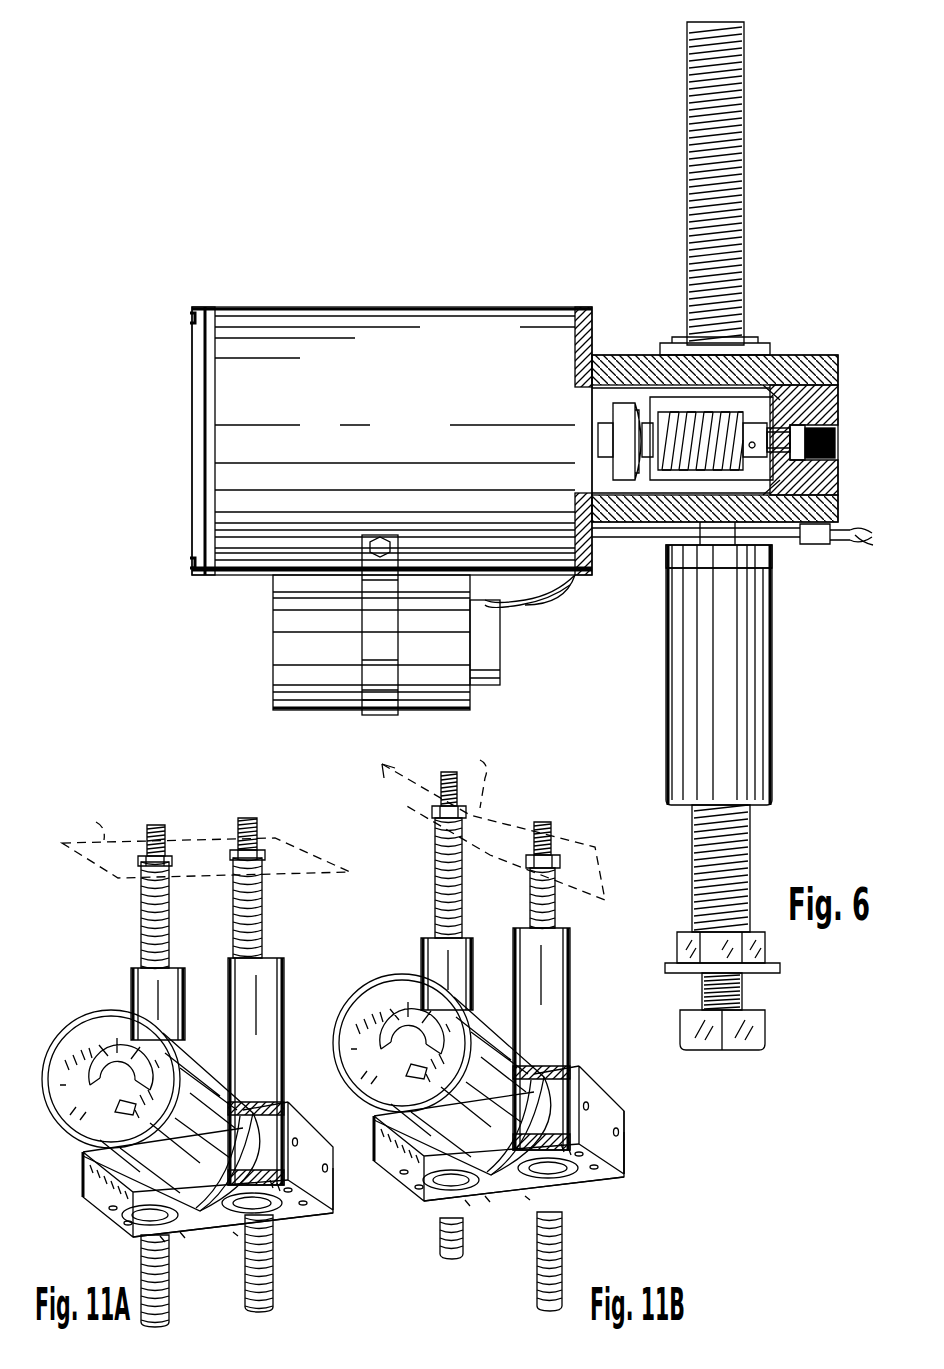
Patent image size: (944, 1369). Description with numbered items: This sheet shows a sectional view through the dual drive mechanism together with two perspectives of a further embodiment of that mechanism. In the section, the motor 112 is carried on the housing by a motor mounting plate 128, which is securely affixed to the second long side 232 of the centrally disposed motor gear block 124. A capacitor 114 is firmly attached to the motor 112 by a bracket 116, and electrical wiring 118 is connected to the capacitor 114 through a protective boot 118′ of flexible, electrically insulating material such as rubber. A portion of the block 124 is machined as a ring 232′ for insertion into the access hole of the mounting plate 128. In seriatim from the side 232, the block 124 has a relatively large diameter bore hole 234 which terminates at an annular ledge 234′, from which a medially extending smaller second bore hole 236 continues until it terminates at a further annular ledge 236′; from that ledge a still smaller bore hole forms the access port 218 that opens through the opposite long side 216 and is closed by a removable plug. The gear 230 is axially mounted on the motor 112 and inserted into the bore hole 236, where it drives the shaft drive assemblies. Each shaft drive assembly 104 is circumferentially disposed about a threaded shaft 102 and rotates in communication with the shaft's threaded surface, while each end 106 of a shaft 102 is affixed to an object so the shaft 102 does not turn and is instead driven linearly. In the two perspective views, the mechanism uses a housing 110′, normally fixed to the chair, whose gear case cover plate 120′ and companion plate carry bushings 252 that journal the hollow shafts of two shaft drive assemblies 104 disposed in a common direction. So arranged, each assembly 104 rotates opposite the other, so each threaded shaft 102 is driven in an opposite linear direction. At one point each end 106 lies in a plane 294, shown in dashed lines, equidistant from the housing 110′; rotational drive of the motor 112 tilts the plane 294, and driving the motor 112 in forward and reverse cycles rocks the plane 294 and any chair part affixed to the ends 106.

In FIG. 6, the threaded shaft 102 is at (758, 855).
In FIG. 11A, the threaded shaft 102 is at (233, 915).
In FIG. 11B, the threaded shaft 102 is at (524, 891).
In FIG. 6, the shaft drive assembly 104 is at (683, 703).
In FIG. 11A, the shaft drive assembly 104 is at (226, 985).
In FIG. 11B, the shaft drive assembly 104 is at (516, 955).
In FIG. 6, the end 106 is at (757, 1035).
In FIG. 11A, the end 106 is at (232, 858).
In FIG. 11B, the end 106 is at (528, 855).
In FIG. 11A, the housing 110′ is at (95, 1175).
In FIG. 11B, the housing 110′ is at (618, 1150).
In FIG. 6, the motor 112 is at (530, 565).
In FIG. 11A, the motor 112 is at (68, 1036).
In FIG. 11B, the motor 112 is at (380, 1002).
In FIG. 6, the capacitor 114 is at (330, 712).
In FIG. 6, the bracket 116 is at (378, 715).
In FIG. 6, the electrical wiring 118 is at (525, 595).
In FIG. 6, the protective boot 118′ is at (502, 650).
In FIG. 11A, the first gear case cover plate 120′ is at (305, 1120).
In FIG. 11B, the first gear case cover plate 120′ is at (605, 1090).
In FIG. 11B, the motor gear block 124 is at (615, 1122).
In FIG. 6, the motor mounting plate 128 is at (596, 583).
In FIG. 6, the long side 216 is at (840, 445).
In FIG. 6, the access port 218 is at (845, 385).
In FIG. 6, the gear 230 is at (775, 575).
In FIG. 6, the second long side 232 is at (592, 490).
In FIG. 6, the ring portion 232′ is at (598, 440).
In FIG. 6, the large diameter bore hole 234 is at (660, 345).
In FIG. 6, the annular ledge 234′ is at (700, 345).
In FIG. 6, the second bore hole 236 is at (760, 345).
In FIG. 6, the annular ledge 236′ is at (775, 345).
In FIG. 11A, the bushing 252 is at (228, 1222).
In FIG. 11B, the bushing 252 is at (523, 1197).
In FIG. 11A, the plane 294 is at (206, 841).
In FIG. 11B, the plane 294 is at (493, 820).